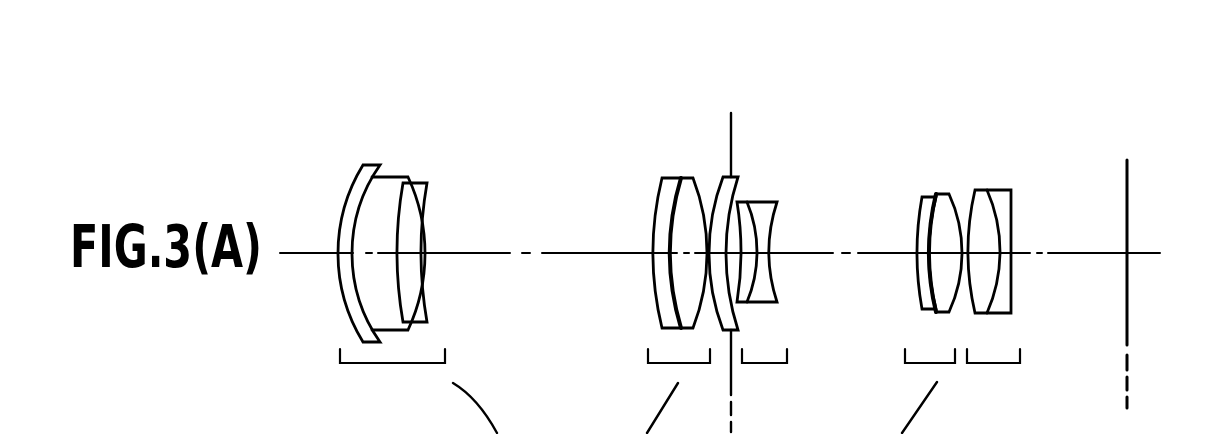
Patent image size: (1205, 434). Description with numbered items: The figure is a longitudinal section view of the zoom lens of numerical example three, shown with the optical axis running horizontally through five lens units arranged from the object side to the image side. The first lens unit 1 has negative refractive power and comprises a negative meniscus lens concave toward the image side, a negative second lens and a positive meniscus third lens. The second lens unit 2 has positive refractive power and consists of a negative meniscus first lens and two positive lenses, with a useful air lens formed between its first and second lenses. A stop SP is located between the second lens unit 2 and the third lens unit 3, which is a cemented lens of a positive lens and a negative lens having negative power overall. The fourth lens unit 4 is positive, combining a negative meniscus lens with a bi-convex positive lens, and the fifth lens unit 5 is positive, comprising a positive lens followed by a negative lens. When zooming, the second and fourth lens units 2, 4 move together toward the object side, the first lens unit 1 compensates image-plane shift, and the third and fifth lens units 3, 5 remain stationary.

The first lens unit 1 is at (450, 144).
The second lens unit 2 is at (723, 146).
The third lens unit 3 is at (792, 176).
The fourth lens unit 4 is at (963, 176).
The fifth lens unit 5 is at (1027, 146).
The stop SP is at (731, 127).